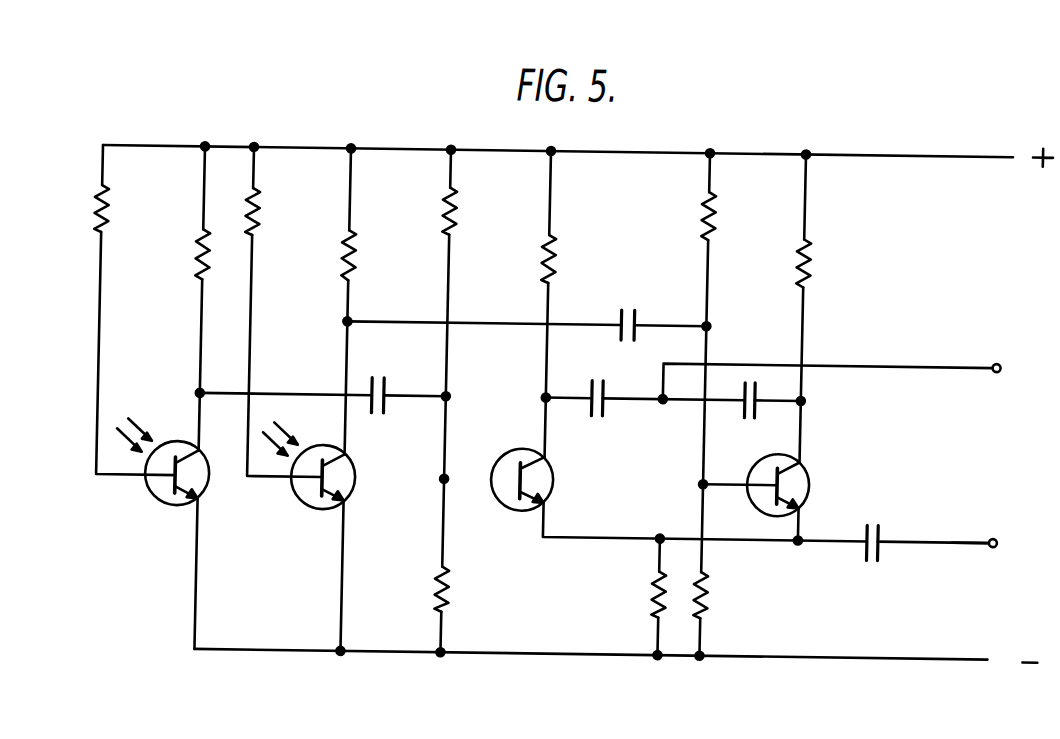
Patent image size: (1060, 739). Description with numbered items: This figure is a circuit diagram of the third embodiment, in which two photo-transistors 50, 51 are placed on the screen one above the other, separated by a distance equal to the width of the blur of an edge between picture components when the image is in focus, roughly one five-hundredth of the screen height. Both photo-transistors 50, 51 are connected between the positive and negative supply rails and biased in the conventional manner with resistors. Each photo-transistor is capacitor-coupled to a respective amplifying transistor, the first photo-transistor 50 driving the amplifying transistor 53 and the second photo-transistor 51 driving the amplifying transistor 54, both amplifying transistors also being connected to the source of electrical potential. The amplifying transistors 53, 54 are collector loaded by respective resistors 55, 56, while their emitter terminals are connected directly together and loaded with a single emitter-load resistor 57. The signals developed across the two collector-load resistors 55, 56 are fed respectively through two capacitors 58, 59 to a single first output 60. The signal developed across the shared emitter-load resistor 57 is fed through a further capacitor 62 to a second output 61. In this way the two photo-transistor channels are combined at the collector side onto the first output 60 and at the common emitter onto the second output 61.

The photo-transistor 50 is at (164, 496).
The photo-transistor 51 is at (308, 500).
The amplifying transistor 53 is at (502, 495).
The amplifying transistor 54 is at (765, 494).
The collector-load resistor 55 is at (556, 264).
The collector-load resistor 56 is at (813, 266).
The emitter-load resistor 57 is at (659, 583).
The capacitor 58 is at (604, 413).
The capacitor 59 is at (753, 409).
The first output 60 is at (1001, 351).
The second output 61 is at (1000, 526).
The capacitor 62 is at (879, 552).